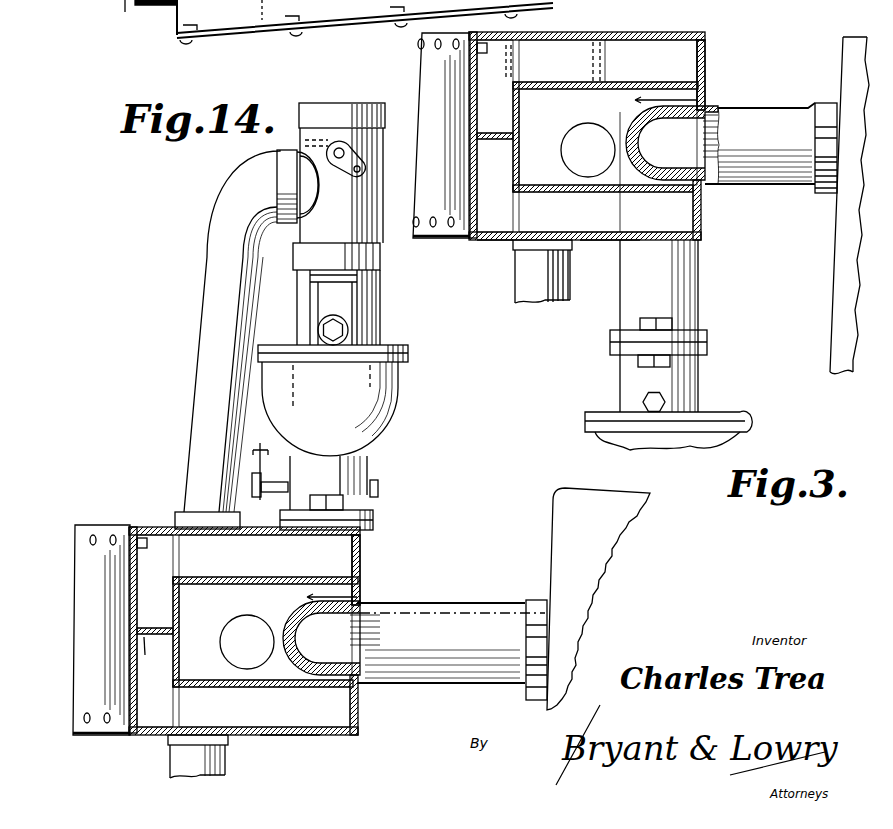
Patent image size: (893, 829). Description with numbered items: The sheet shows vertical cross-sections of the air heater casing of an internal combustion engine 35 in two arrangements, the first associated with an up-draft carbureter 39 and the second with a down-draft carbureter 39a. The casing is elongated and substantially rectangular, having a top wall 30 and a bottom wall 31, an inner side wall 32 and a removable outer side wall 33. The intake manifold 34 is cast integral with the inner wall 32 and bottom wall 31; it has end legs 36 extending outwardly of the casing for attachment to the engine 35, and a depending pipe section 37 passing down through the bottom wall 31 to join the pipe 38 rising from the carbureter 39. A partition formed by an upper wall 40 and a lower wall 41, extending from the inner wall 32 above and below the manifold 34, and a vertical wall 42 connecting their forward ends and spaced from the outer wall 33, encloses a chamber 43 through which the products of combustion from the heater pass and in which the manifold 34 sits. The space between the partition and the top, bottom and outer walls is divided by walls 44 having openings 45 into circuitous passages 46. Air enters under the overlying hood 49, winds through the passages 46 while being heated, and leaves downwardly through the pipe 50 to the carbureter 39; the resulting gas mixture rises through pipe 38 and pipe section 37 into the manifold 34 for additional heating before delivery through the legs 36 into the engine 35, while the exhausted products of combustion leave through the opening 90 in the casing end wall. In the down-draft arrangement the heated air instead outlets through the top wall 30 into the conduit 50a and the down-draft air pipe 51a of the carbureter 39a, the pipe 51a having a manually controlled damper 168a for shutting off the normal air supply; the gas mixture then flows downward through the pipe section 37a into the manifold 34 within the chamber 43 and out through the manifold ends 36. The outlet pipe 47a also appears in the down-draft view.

In FIG. 3, the top wall 30 is at (677, 60).
In FIG. 14, the top wall 30 is at (244, 601).
In FIG. 3, the bottom wall 31 is at (608, 238).
In FIG. 14, the bottom wall 31 is at (299, 755).
In FIG. 3, the inner side wall 32 is at (707, 70).
In FIG. 14, the inner side wall 32 is at (380, 570).
In FIG. 3, the removable outer side wall 33 is at (428, 88).
In FIG. 14, the removable outer side wall 33 is at (313, 367).
In FIG. 3, the intake manifold 34 is at (630, 122).
In FIG. 14, the intake manifold 34 is at (309, 642).
In FIG. 3, the internal combustion engine 35 is at (843, 57).
In FIG. 14, the internal combustion engine 35 is at (567, 532).
In FIG. 3, the end legs 36 is at (767, 120).
In FIG. 14, the end legs 36 is at (485, 623).
In FIG. 3, the depending pipe section 37 is at (678, 278).
In FIG. 3, the pipe 38 is at (630, 376).
In FIG. 3, the carbureter 39 is at (740, 417).
In FIG. 3, the upper partition wall 40 is at (560, 90).
In FIG. 14, the upper partition wall 40 is at (265, 631).
In FIG. 3, the lower partition wall 41 is at (557, 187).
In FIG. 14, the lower partition wall 41 is at (177, 680).
In FIG. 3, the vertical partition wall 42 is at (523, 153).
In FIG. 14, the vertical partition wall 42 is at (179, 581).
In FIG. 3, the chamber 43 is at (702, 108).
In FIG. 14, the chamber 43 is at (384, 590).
In FIG. 3, the walls 44 is at (610, 53).
In FIG. 14, the walls 44 is at (148, 660).
In FIG. 3, the openings 45 is at (500, 243).
In FIG. 3, the circuitous passages 46 is at (533, 60).
In FIG. 14, the circuitous passages 46 is at (285, 633).
In FIG. 14, the outlet pipe 47a is at (223, 767).
In FIG. 14, the hood 49 is at (130, 2).
In FIG. 3, the pipe 50 is at (527, 280).
In FIG. 14, the conduit or pipe 50a is at (210, 278).
In FIG. 14, the down-draft air pipe 51a is at (330, 115).
In FIG. 3, the opening 90 is at (603, 177).
In FIG. 14, the opening 90 is at (247, 642).
In FIG. 14, the manually controlled damper 168a is at (297, 140).
In FIG. 14, the pipe section 37a is at (343, 465).
In FIG. 14, the carbureter 39a is at (363, 406).